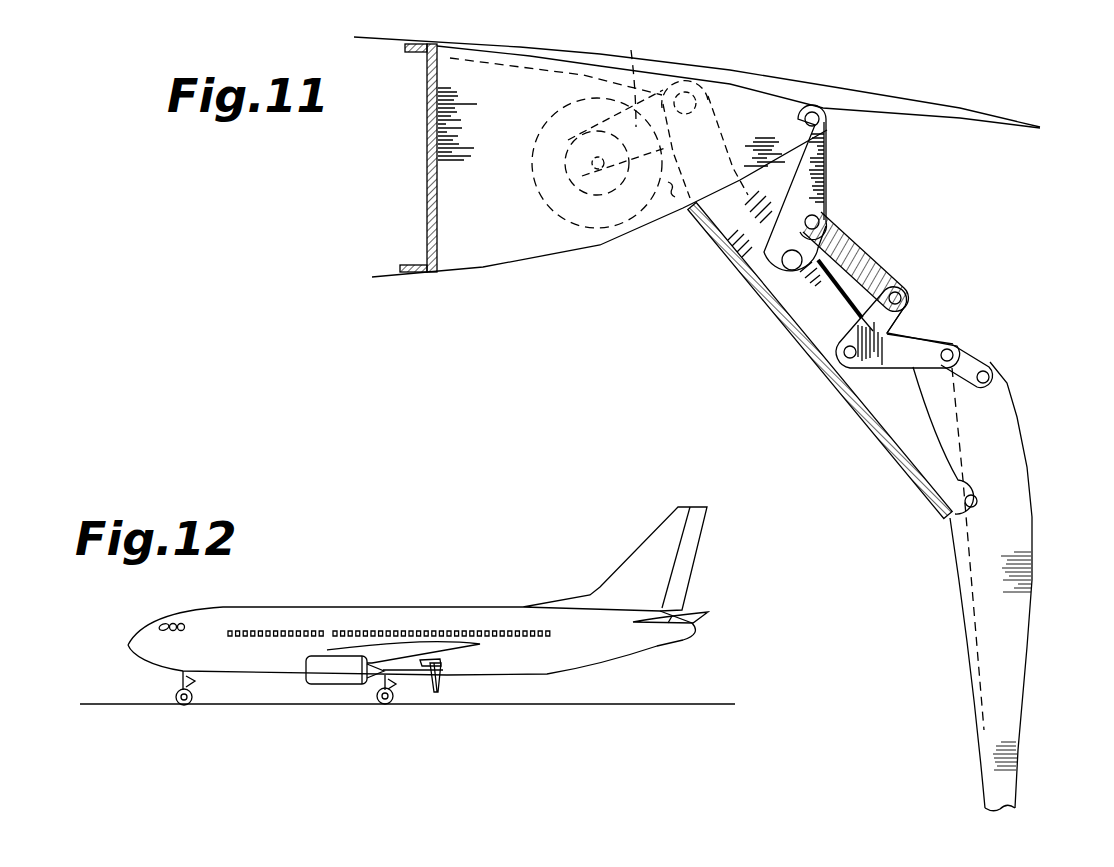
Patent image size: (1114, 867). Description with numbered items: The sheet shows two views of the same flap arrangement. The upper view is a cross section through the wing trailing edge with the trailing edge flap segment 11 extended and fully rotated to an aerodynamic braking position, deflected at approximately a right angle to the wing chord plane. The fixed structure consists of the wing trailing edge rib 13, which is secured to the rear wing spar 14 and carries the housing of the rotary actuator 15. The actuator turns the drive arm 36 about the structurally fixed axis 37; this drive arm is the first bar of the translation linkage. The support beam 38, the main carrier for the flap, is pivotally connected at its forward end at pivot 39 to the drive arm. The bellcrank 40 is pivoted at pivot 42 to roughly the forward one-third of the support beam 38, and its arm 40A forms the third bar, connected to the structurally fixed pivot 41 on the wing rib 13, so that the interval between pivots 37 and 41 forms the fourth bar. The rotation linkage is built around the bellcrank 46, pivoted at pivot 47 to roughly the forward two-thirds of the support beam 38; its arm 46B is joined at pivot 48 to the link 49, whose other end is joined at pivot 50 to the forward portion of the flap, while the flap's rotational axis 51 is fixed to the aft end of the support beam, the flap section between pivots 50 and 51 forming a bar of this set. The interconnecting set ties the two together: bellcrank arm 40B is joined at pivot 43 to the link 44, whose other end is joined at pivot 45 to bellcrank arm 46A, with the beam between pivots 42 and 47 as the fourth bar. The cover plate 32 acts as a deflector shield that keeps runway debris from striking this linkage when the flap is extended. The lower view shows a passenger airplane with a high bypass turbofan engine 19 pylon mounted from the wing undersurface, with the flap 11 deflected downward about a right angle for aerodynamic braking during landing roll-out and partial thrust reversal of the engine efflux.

In FIG. 11, the trailing edge flap segment 11 is at (1033, 480).
In FIG. 12, the trailing edge flap segment 11 is at (444, 670).
In FIG. 11, the wing trailing edge rib 13 is at (495, 90).
In FIG. 11, the rear wing spar 14 is at (427, 167).
In FIG. 11, the rotary actuator 15 is at (575, 100).
In FIG. 12, the high bypass turbofan engine 19 is at (312, 684).
In FIG. 11, the cover plate 32 is at (780, 315).
In FIG. 11, the drive arm 36 is at (634, 77).
In FIG. 11, the structurally fixed axis 37 is at (590, 165).
In FIG. 11, the support beam 38 is at (828, 317).
In FIG. 11, the pivot 39 is at (700, 90).
In FIG. 11, the bellcrank 40 is at (827, 177).
In FIG. 11, the bellcrank arm 40A is at (825, 147).
In FIG. 11, the bellcrank arm 40B is at (792, 236).
In FIG. 11, the structurally fixed pivot 41 is at (823, 120).
In FIG. 11, the pivot 42 is at (789, 262).
In FIG. 11, the pivot 43 is at (822, 218).
In FIG. 11, the link 44 is at (850, 252).
In FIG. 11, the pivot 45 is at (902, 288).
In FIG. 11, the bellcrank 46 is at (887, 333).
In FIG. 11, the bellcrank arm 46A is at (905, 323).
In FIG. 11, the bellcrank arm 46B is at (920, 345).
In FIG. 11, the pivot 47 is at (843, 363).
In FIG. 11, the pivot 48 is at (960, 355).
In FIG. 11, the link 49 is at (990, 362).
In FIG. 11, the pivot 50 is at (998, 384).
In FIG. 11, the rotational axis 51 is at (985, 502).